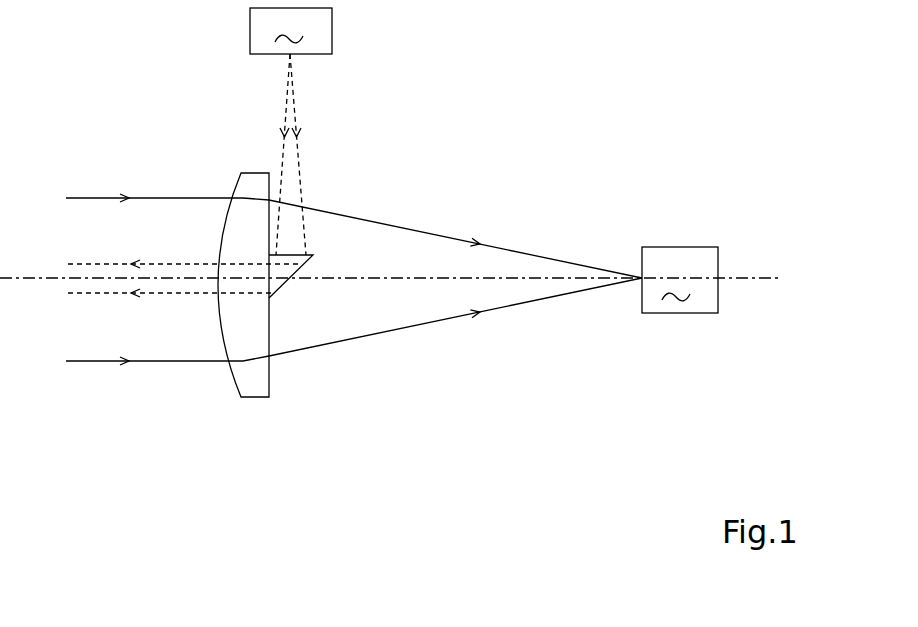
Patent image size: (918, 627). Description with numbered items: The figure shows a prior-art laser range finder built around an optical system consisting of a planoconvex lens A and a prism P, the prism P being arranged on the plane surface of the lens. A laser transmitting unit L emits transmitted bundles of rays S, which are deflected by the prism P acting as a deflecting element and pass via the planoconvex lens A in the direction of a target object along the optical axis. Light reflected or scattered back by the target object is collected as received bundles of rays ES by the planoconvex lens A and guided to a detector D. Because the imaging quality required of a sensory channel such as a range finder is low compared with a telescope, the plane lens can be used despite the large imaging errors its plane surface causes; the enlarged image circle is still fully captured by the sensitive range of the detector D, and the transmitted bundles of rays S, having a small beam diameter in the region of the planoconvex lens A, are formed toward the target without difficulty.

The laser transmitting unit L is at (291, 131).
The planoconvex lens A is at (249, 186).
The prism P is at (299, 254).
The transmitted bundles of rays S is at (105, 263).
The received bundles of rays ES is at (105, 363).
The detector D is at (680, 280).